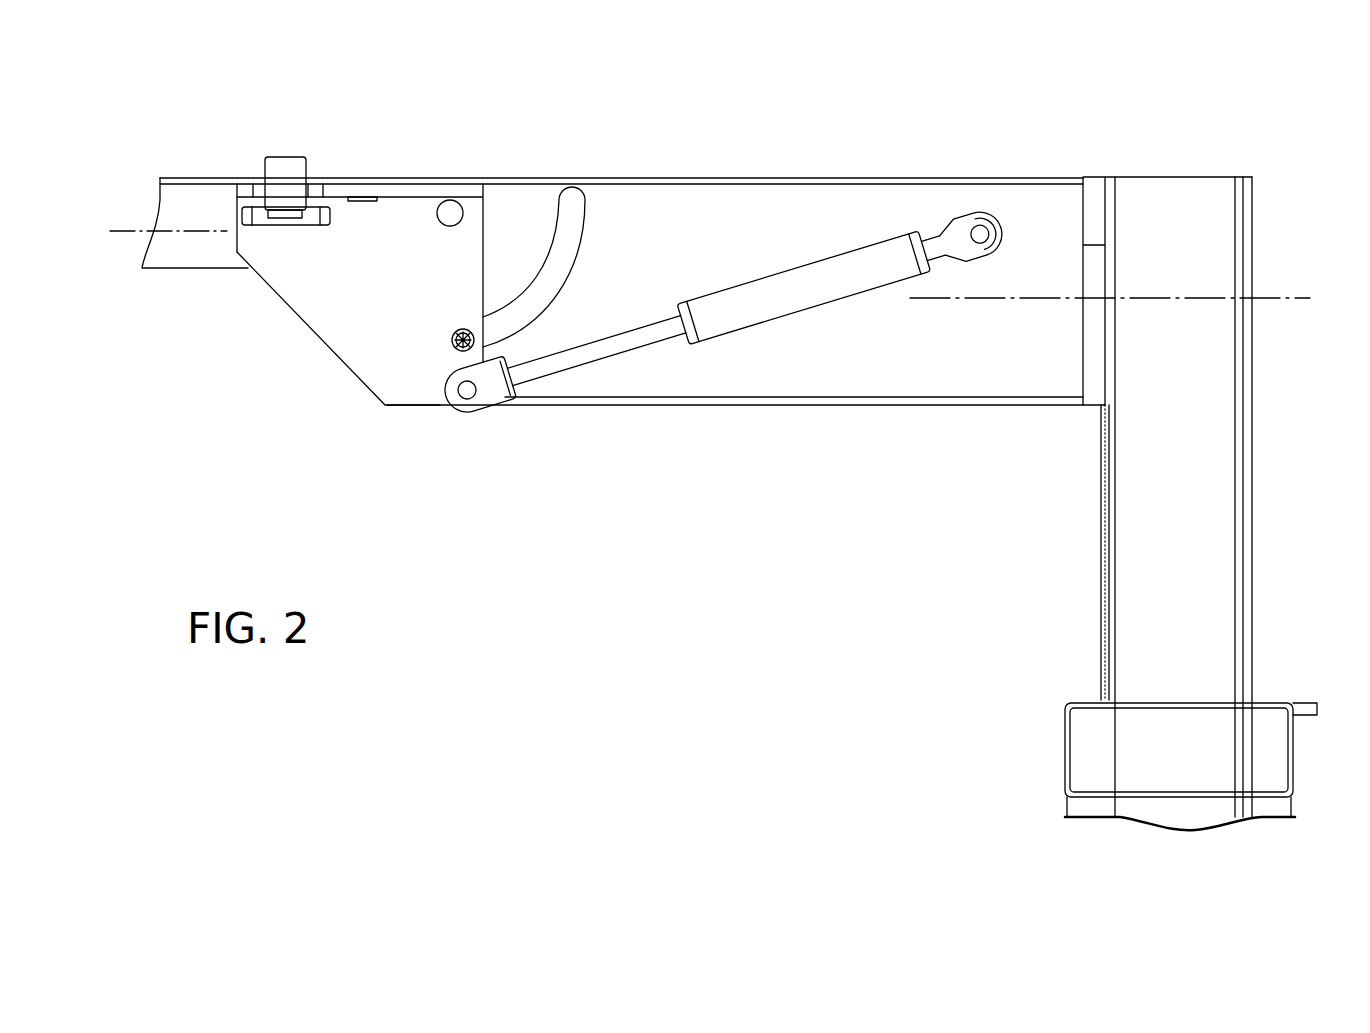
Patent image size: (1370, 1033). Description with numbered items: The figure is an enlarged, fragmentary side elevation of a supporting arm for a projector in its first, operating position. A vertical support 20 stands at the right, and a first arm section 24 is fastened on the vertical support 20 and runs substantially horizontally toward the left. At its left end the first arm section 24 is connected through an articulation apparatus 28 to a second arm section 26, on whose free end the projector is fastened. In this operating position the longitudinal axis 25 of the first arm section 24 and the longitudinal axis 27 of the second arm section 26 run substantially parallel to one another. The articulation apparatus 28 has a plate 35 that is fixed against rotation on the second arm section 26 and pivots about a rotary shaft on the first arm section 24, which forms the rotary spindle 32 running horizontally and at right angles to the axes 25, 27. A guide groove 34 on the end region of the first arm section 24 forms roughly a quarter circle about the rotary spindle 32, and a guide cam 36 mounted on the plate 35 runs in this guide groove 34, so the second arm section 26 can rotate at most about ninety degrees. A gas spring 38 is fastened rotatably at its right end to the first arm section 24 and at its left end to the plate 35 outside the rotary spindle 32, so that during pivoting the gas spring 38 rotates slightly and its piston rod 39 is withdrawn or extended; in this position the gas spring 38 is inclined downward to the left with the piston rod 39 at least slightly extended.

The vertical support 20 is at (1217, 483).
The first arm section 24 is at (822, 183).
The longitudinal axis of the first arm section 25 is at (1283, 298).
The second arm section 26 is at (199, 200).
The longitudinal axis of the second arm section 27 is at (125, 233).
The articulation apparatus 28 is at (460, 140).
The rotary spindle 32 is at (450, 208).
The guide groove 34 is at (573, 208).
The plate 35 is at (340, 327).
The guide cam 36 is at (457, 345).
The gas spring 38 is at (770, 305).
The piston rod 39 is at (612, 352).